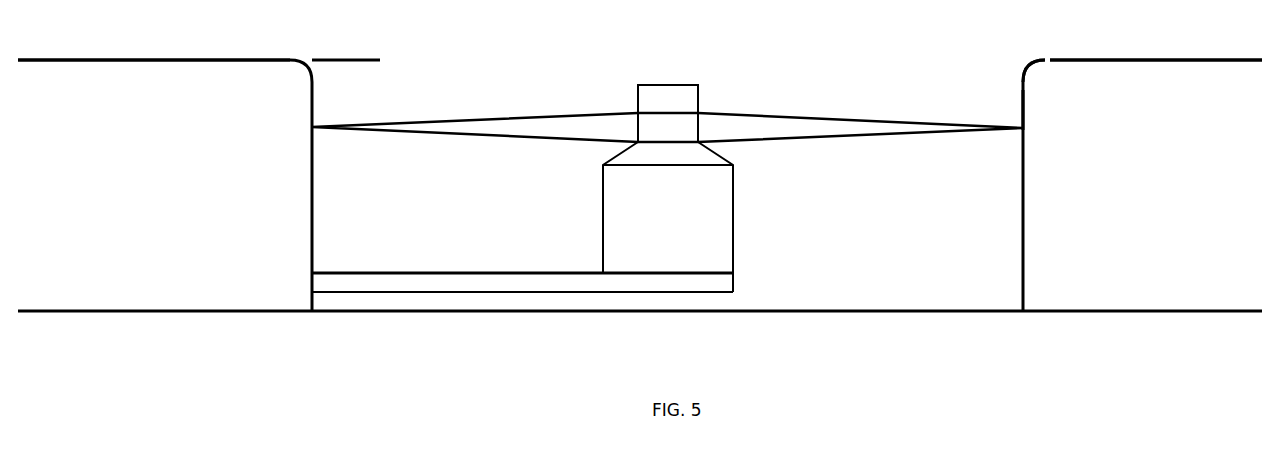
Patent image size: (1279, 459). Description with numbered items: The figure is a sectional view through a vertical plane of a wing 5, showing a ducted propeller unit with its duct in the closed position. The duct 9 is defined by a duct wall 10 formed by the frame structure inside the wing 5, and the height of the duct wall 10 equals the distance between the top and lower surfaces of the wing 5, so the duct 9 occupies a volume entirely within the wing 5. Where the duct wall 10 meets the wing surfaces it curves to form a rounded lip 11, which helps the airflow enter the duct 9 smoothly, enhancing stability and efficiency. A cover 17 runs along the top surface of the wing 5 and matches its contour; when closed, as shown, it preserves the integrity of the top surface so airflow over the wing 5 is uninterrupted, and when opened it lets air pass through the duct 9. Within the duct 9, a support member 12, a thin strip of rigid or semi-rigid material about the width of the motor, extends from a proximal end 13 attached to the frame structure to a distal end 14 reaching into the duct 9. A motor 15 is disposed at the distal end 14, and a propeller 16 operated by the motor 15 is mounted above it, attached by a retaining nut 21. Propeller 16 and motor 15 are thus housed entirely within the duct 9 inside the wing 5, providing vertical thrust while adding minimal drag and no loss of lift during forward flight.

The wing 5 is at (165, 88).
The duct 9 is at (890, 90).
The duct wall 10 is at (1021, 102).
The rounded lip 11 is at (1028, 72).
The support member 12 is at (503, 280).
The proximal end 13 is at (315, 282).
The distal end 14 is at (720, 286).
The motor 15 is at (720, 238).
The propeller 16 is at (815, 128).
The cover 17 is at (393, 63).
The retaining nut 21 is at (662, 93).